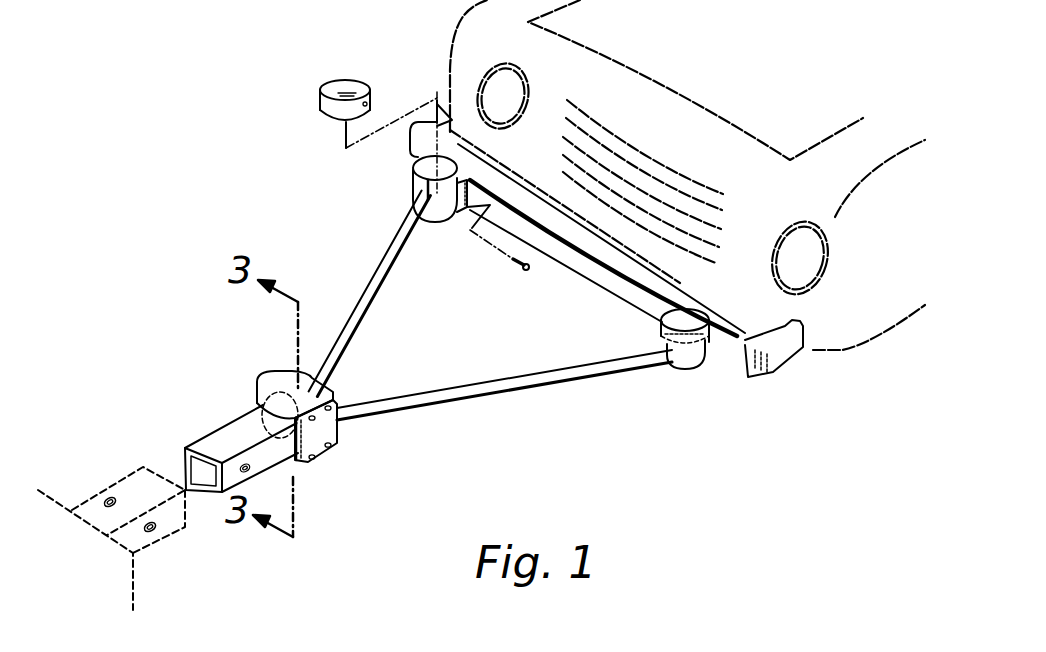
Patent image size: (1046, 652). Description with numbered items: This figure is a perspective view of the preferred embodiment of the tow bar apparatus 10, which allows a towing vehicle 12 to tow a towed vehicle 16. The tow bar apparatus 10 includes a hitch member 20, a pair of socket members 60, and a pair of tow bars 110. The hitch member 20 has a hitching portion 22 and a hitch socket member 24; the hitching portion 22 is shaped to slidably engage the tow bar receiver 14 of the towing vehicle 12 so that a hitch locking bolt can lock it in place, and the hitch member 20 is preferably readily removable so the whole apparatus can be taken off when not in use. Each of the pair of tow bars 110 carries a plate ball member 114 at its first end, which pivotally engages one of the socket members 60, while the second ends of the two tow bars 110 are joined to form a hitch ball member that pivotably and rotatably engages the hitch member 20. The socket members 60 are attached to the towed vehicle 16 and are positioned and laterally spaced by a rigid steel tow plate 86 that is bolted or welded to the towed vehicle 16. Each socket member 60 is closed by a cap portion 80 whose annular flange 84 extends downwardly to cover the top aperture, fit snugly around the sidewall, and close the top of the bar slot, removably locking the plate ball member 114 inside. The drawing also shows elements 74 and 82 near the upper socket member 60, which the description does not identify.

The tow bar apparatus 10 is at (562, 423).
The towing vehicle 12 is at (133, 593).
The tow bar receiver 14 is at (163, 527).
The towed vehicle 16 is at (731, 66).
The hitch member 20 is at (333, 463).
The hitching portion 22 is at (215, 437).
The hitch socket member 24 is at (278, 378).
The socket members 60 is at (455, 220).
The pivot axis 74 is at (427, 141).
The cap portions 80 is at (320, 101).
The pin 82 is at (515, 268).
The annular flange 84 is at (330, 115).
The tow plate 86 is at (600, 283).
The tow bars 110 is at (372, 275).
The plate ball member 114 is at (421, 183).